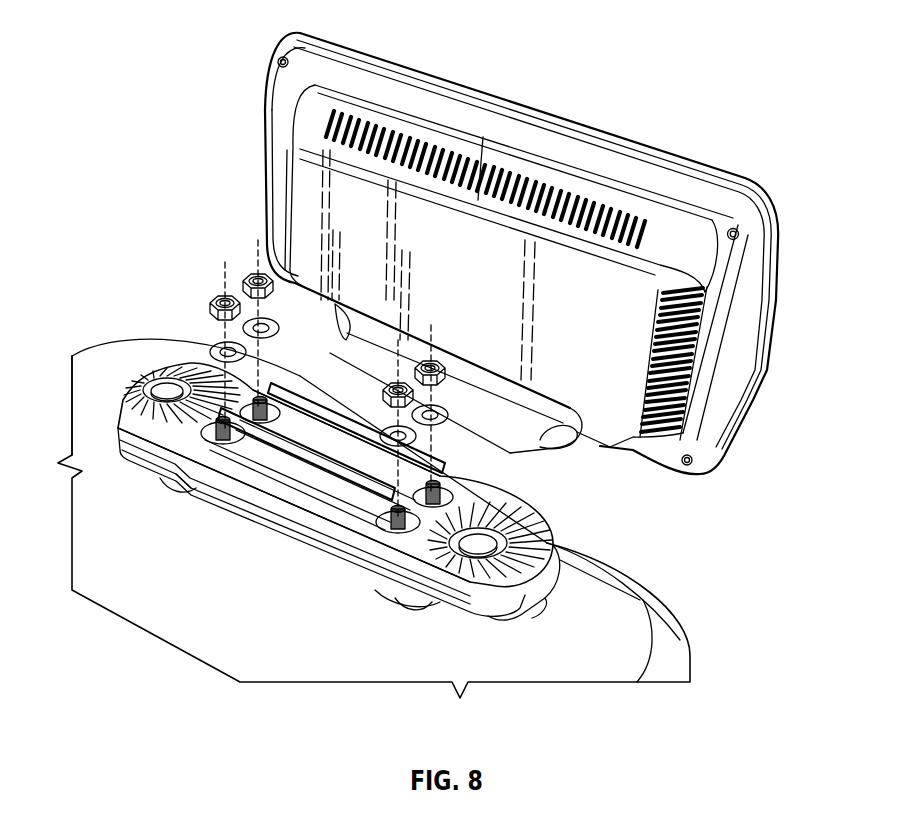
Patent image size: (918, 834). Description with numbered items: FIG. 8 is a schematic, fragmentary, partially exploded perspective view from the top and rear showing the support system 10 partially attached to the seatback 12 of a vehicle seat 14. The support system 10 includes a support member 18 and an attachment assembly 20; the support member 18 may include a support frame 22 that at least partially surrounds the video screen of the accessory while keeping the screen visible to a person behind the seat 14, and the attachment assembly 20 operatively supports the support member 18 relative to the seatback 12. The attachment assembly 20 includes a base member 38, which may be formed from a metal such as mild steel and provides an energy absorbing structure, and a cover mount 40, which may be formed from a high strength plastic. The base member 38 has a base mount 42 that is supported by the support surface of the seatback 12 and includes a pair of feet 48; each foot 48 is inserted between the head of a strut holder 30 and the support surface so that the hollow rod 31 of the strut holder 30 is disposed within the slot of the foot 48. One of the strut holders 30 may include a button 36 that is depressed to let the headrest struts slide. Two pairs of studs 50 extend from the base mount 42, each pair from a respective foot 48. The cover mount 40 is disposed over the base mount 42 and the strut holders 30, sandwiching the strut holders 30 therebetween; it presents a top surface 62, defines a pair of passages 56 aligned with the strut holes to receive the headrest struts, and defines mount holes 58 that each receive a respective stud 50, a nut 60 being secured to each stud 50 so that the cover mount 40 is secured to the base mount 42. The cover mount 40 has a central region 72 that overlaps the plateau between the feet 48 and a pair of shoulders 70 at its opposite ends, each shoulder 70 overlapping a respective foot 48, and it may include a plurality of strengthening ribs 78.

The support system 10 is at (233, 74).
The seatback 12 is at (93, 370).
The seat 14 is at (630, 630).
The support member 18 is at (505, 115).
The attachment assembly 20 is at (172, 294).
The support frame 22 is at (684, 187).
The strut holder 30 is at (140, 450).
The hollow rod 31 is at (594, 580).
The button 36 is at (589, 585).
The base member 38 is at (375, 596).
The cover mount 40 is at (323, 517).
The base mount 42 is at (158, 483).
The foot 48 is at (537, 613).
The stud 50 is at (233, 507).
The passage 56 is at (170, 378).
The mount hole 58 is at (272, 346).
The nut 60 is at (216, 294).
The top surface 62 is at (132, 398).
The shoulder 70 is at (143, 420).
The central region 72 is at (195, 482).
The strengthening ribs 78 is at (200, 366).